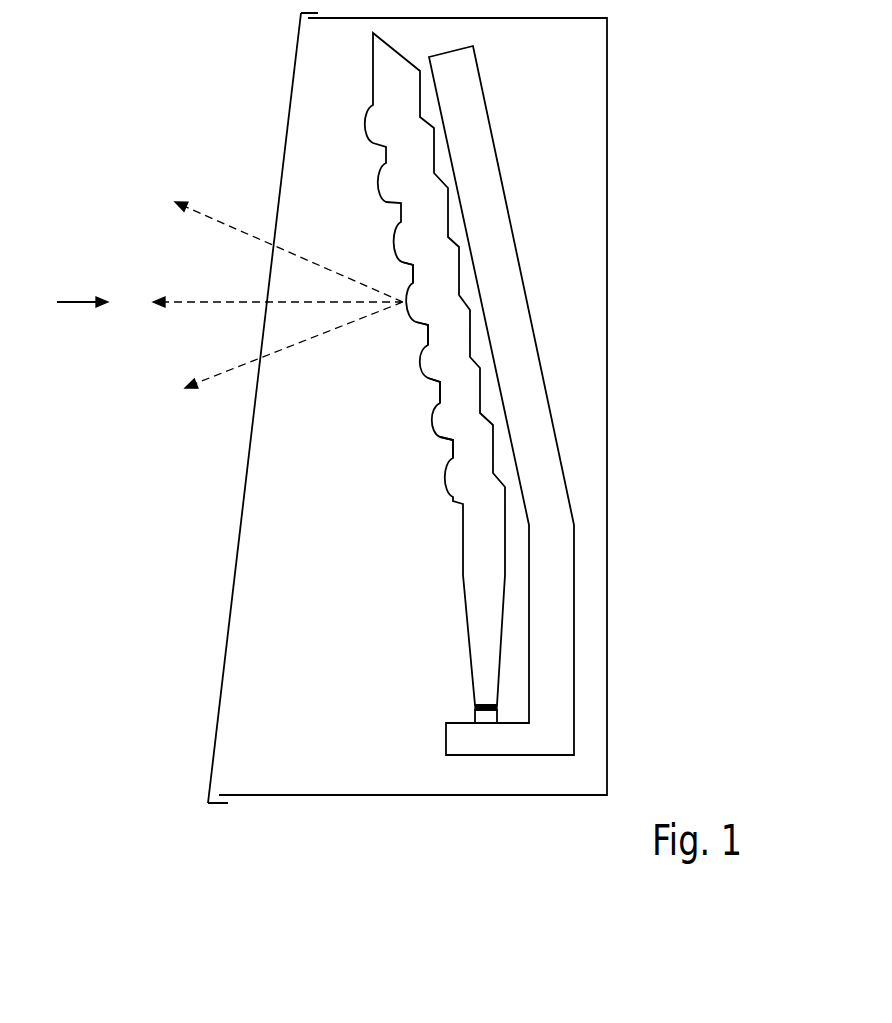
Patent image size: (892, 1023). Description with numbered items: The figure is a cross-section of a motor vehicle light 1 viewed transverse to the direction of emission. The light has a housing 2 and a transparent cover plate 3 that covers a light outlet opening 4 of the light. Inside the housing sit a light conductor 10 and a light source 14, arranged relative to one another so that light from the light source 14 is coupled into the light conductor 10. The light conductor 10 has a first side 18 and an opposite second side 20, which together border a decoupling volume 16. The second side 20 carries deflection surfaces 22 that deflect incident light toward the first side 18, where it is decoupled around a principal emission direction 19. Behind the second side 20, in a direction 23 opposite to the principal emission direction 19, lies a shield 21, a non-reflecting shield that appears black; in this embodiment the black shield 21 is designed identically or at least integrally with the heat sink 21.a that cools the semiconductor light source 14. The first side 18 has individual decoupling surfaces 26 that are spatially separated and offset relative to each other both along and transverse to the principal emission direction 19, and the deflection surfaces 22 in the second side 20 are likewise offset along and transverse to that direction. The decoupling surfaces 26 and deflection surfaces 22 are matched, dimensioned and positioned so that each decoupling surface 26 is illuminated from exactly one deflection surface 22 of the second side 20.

The motor vehicle light 1 is at (158, 636).
The housing 2 is at (608, 588).
The transparent cover plate 3 is at (284, 133).
The light outlet opening 4 is at (265, 482).
The light conductor 10 is at (415, 541).
The light source 14 is at (485, 717).
The decoupling volume 16 is at (472, 387).
The first side 18 is at (440, 537).
The principal emission direction 19 is at (225, 300).
The second side 20 is at (466, 278).
The shield 21 is at (560, 96).
The heat sink 21.a is at (498, 742).
The deflection surfaces 22 is at (477, 360).
The direction opposite to the principal emission direction 23 is at (73, 302).
The decoupling surfaces 26 is at (420, 420).